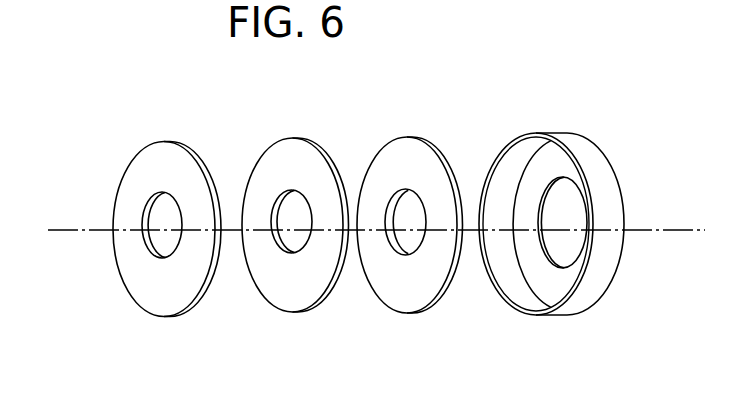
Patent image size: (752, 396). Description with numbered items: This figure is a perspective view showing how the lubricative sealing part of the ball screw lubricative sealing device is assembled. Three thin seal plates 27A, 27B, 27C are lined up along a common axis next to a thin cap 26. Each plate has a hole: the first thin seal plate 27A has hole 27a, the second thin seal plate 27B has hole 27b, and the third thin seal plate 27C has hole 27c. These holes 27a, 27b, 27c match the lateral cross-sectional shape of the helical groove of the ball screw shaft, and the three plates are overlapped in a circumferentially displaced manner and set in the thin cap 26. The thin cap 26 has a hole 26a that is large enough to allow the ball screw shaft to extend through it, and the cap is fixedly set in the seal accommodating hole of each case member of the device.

The thin seal plate 27A is at (163, 155).
The hole of thin seal plate 27a is at (157, 245).
The thin seal plate 27B is at (285, 163).
The hole of thin seal plate 27b is at (294, 240).
The thin seal plate 27C is at (395, 155).
The hole of thin seal plate 27c is at (407, 237).
The thin cap 26 is at (588, 157).
The hole of thin cap 26a is at (560, 250).